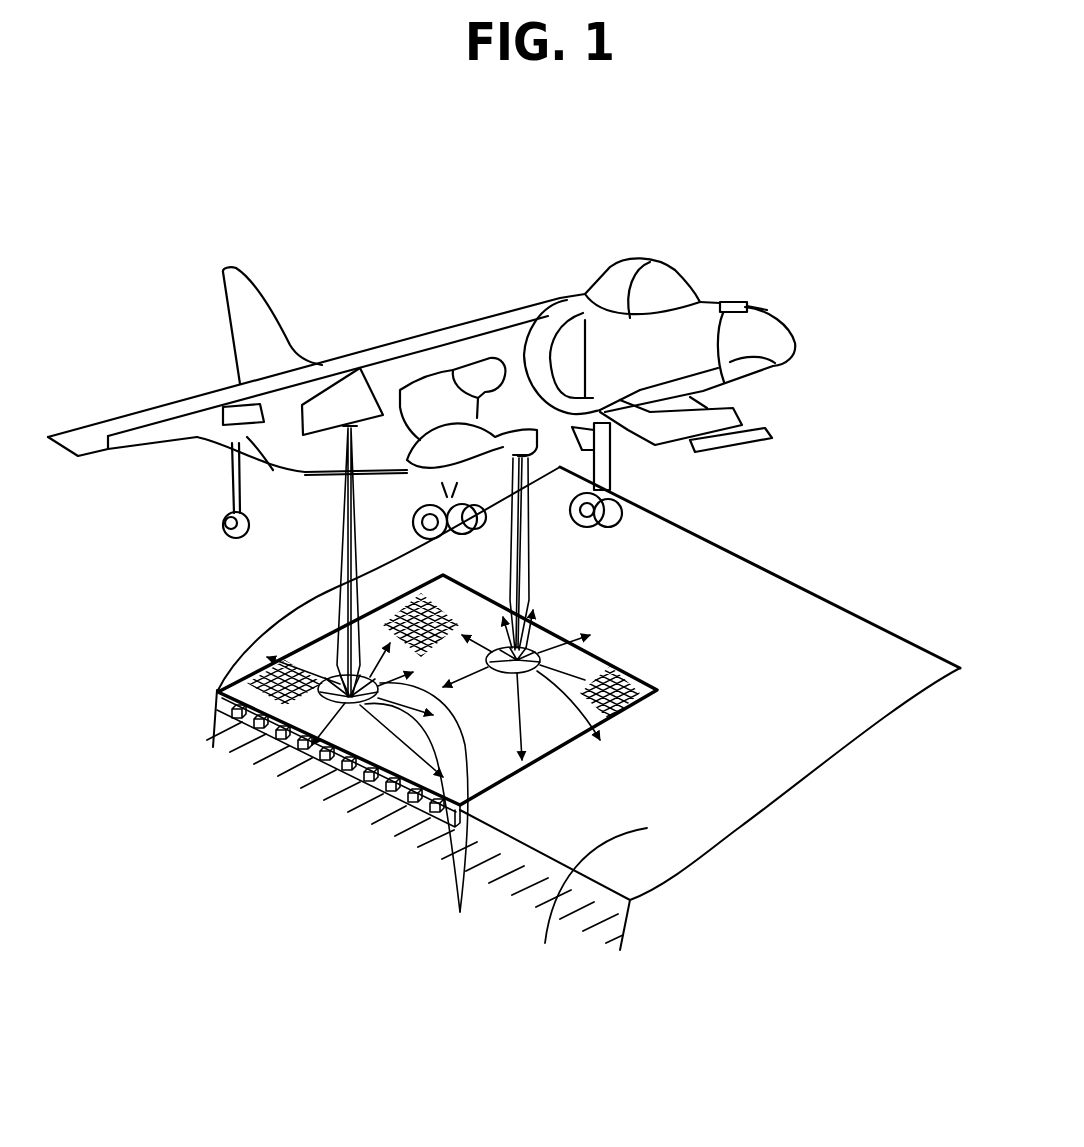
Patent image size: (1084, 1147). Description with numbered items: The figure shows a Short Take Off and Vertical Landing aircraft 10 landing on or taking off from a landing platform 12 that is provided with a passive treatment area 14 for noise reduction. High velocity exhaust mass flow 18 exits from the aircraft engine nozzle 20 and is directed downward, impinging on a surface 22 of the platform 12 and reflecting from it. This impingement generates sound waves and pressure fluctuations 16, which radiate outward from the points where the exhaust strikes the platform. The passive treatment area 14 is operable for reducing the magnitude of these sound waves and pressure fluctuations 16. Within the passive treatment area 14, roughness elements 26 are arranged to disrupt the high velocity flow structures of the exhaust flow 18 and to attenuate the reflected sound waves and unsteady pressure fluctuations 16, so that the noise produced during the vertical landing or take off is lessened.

The Short Take Off and Vertical Landing (STOVL) aircraft 10 is at (712, 250).
The landing platform 12 is at (858, 650).
The passive treatment area 14 is at (838, 597).
The sound waves and pressure fluctuations 16 is at (236, 716).
The high velocity exhaust mass flow 18 is at (337, 587).
The aircraft engine nozzle 20 is at (513, 447).
The surface of the platform 22 is at (585, 906).
The roughness elements 26 is at (437, 810).